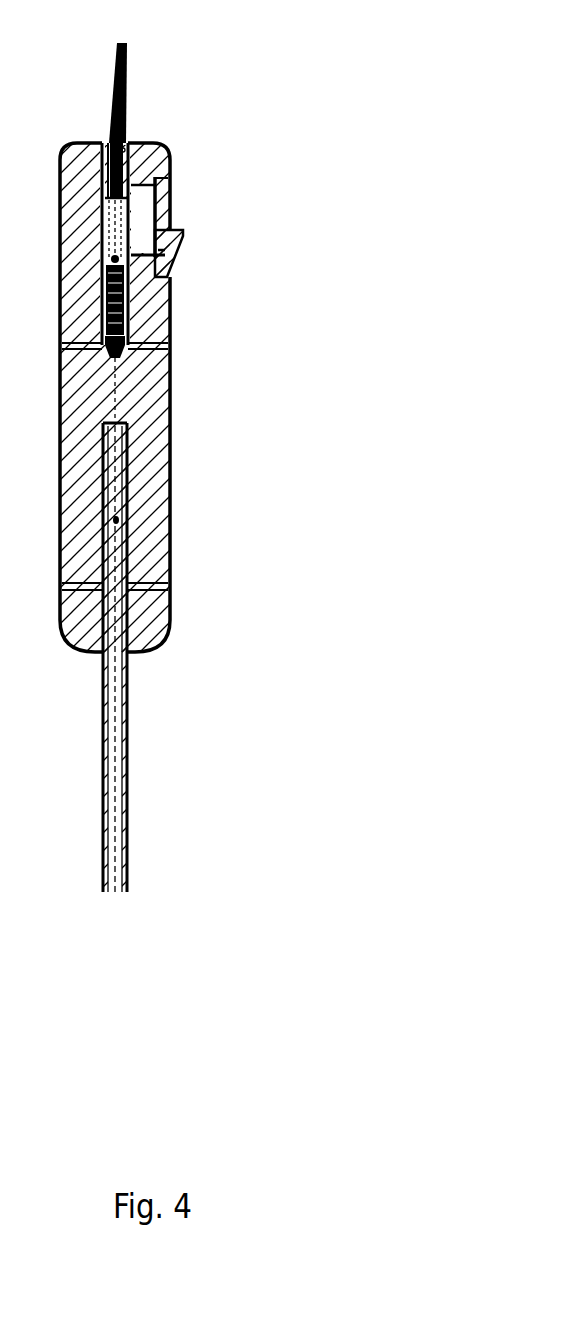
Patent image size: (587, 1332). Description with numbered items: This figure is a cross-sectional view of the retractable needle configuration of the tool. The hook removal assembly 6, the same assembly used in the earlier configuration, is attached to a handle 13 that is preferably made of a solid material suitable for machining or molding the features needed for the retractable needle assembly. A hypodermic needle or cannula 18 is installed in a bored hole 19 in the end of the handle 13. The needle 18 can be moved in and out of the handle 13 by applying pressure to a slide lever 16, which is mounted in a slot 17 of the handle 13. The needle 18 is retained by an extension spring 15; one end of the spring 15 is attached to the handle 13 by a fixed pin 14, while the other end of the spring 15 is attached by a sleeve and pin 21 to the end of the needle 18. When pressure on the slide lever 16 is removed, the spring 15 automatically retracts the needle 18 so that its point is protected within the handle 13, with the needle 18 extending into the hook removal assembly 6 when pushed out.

The hook removal assembly 6 is at (120, 750).
The handle 13 is at (140, 397).
The fixed pin 14 is at (153, 345).
The extension spring 15 is at (130, 302).
The slide lever 16 is at (183, 240).
The slot 17 is at (130, 212).
The hypodermic needle 18 is at (115, 150).
The bored hole 19 is at (125, 146).
The sleeve and pin 21 is at (115, 222).